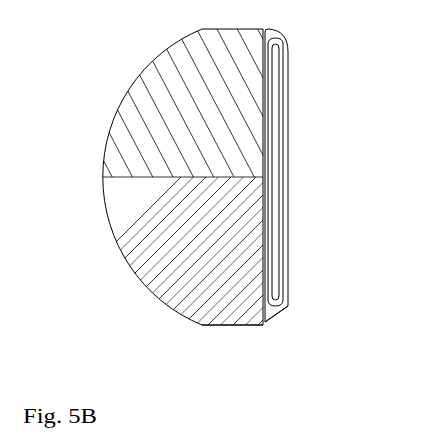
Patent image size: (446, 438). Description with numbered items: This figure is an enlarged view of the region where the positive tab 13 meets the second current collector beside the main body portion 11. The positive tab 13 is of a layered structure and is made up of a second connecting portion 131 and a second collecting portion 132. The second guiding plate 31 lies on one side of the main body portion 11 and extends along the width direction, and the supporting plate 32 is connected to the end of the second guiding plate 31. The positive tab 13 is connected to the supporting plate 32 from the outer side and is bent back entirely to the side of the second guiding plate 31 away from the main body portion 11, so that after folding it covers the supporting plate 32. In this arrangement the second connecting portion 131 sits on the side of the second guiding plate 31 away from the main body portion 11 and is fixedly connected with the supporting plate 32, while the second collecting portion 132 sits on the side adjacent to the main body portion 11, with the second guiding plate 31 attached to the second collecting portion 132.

The main body portion 11 is at (147, 243).
The positive tab 13 is at (289, 46).
The second guiding plate 31 is at (276, 175).
The supporting plate 32 is at (285, 94).
The second connecting portion 131 is at (289, 307).
The second collecting portion 132 is at (263, 293).